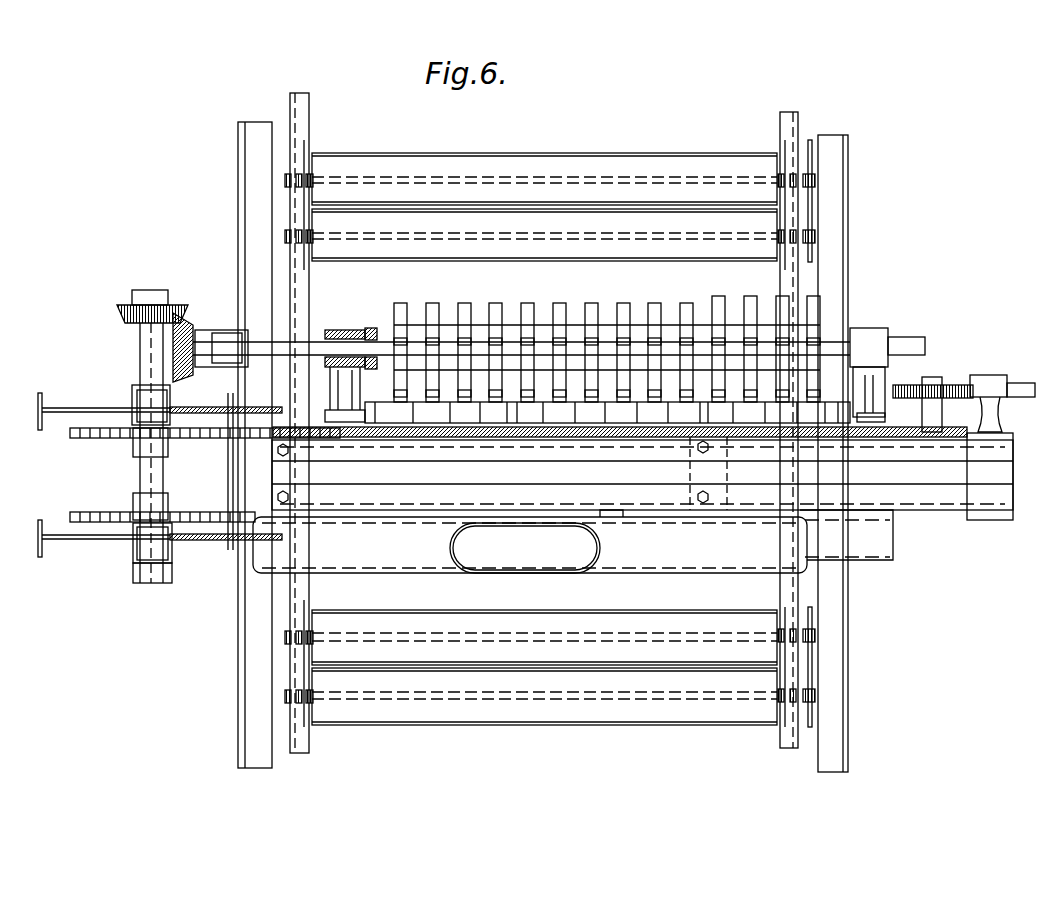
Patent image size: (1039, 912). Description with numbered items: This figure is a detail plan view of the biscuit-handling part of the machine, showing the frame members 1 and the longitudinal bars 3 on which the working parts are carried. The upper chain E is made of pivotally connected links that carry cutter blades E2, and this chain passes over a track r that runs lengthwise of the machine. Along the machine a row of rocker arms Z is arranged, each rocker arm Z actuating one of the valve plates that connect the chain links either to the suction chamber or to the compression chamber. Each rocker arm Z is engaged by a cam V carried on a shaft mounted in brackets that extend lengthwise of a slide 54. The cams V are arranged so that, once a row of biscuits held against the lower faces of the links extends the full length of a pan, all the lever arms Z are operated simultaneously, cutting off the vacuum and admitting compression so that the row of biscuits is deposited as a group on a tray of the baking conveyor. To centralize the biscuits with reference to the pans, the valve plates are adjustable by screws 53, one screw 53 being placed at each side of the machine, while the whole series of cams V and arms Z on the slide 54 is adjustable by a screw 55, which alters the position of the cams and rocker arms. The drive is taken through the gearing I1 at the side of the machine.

The frame post 1 is at (785, 145).
The longitudinal bars 3 is at (550, 439).
The cam V is at (430, 303).
The bevel gear drive I1 is at (198, 310).
The screw 53 is at (37, 397).
The cutter blade E2 is at (87, 452).
The rocker arm Z is at (607, 412).
The track r is at (620, 471).
The slide 54 is at (905, 417).
The screw 55 is at (947, 400).